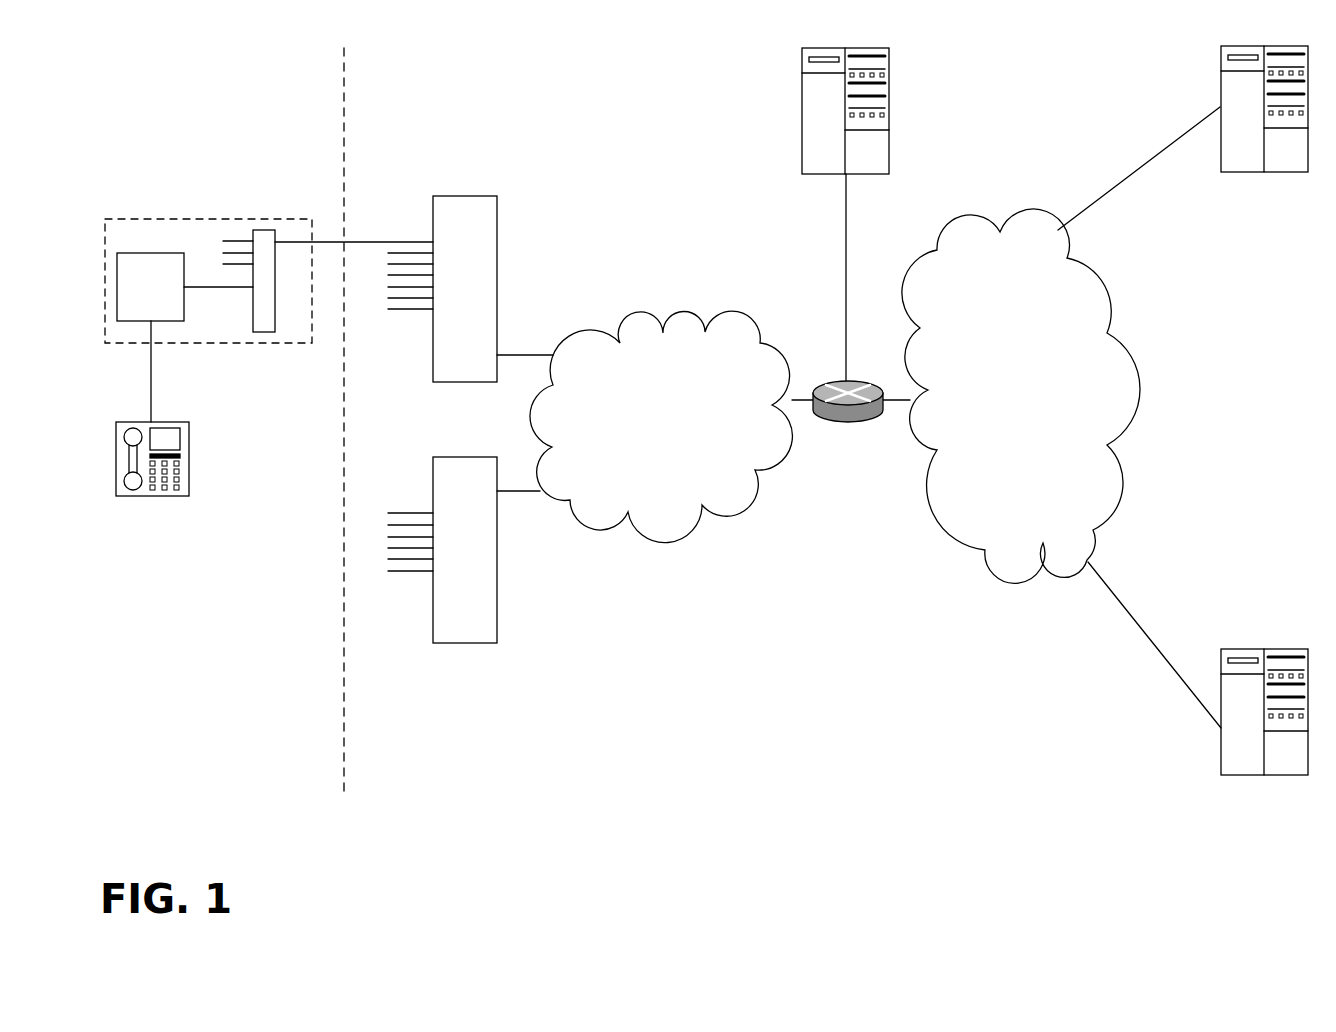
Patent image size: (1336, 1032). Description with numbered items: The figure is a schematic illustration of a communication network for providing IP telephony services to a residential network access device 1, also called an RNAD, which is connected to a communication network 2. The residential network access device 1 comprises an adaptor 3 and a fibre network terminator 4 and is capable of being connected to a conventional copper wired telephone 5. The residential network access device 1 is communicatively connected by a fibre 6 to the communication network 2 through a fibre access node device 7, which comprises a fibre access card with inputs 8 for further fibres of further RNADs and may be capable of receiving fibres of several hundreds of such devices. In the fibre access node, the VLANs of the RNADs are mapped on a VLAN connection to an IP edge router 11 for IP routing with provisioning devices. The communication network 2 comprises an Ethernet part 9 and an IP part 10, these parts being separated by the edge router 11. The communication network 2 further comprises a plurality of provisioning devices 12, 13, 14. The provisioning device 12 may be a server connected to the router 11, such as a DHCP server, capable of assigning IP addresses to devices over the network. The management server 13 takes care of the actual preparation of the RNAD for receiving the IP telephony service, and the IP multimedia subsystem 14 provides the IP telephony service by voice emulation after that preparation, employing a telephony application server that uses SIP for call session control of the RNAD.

The residential network access device 1 is at (148, 218).
The communication network 2 is at (659, 158).
The adaptor 3 is at (168, 300).
The fibre network terminator 4 is at (264, 325).
The wired telephone 5 is at (190, 482).
The fibre 6 is at (357, 240).
The fibre access node device 7 is at (455, 194).
The inputs 8 is at (402, 311).
The Ethernet part 9 is at (645, 426).
The IP part 10 is at (999, 422).
The IP edge router 11 is at (838, 418).
The provisioning device 12 is at (889, 97).
The management server 13 is at (1220, 56).
The IP multimedia subsystem 14 is at (1220, 755).